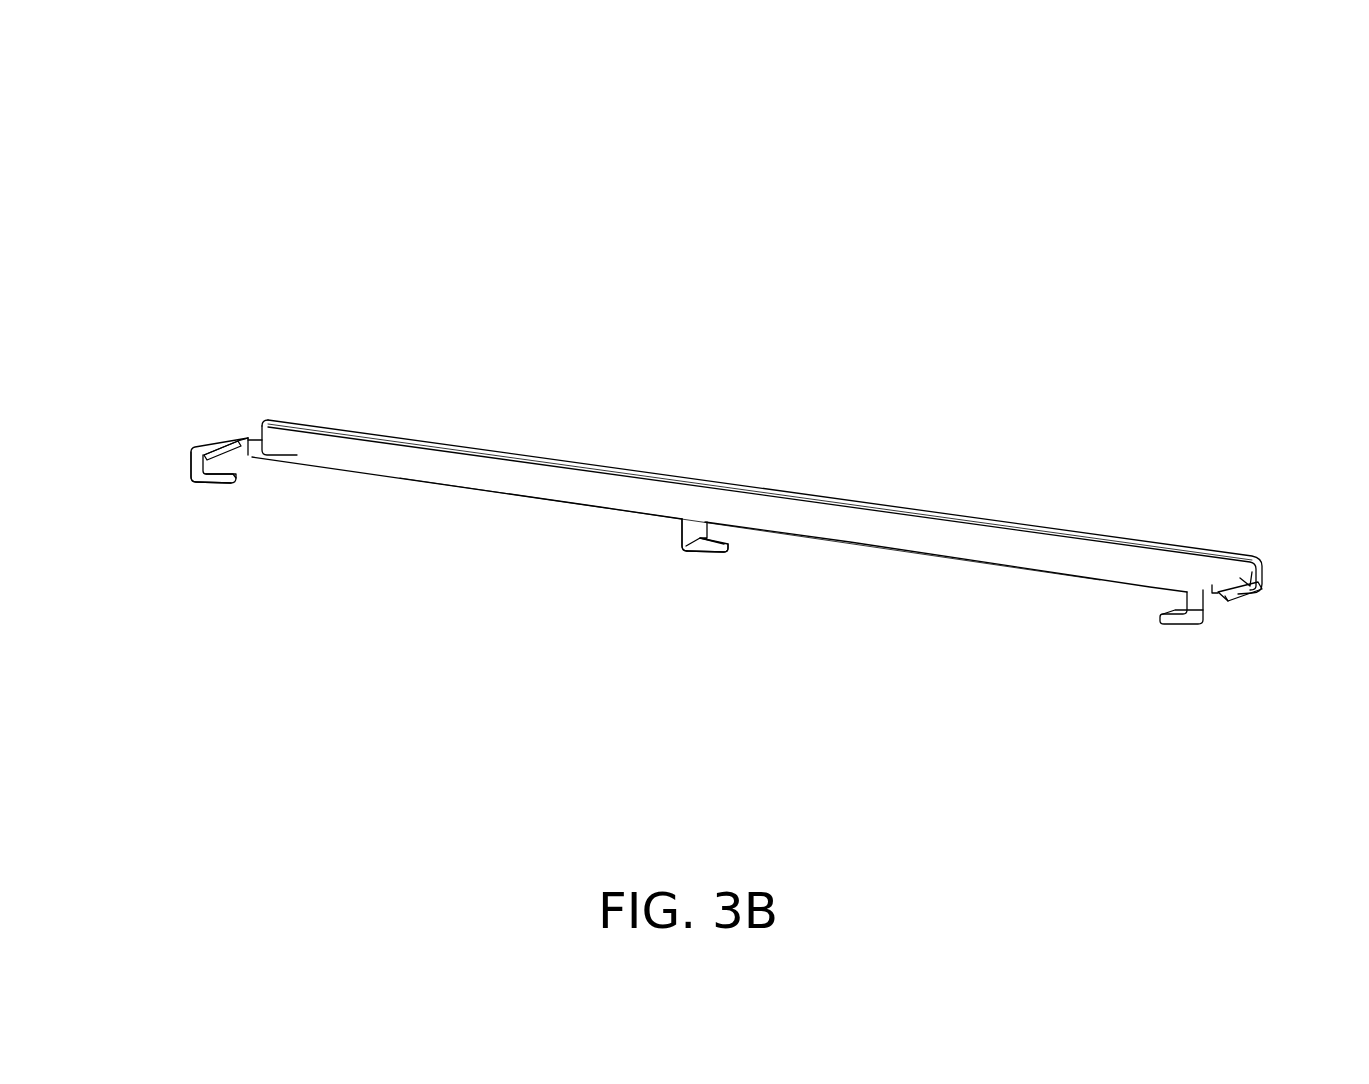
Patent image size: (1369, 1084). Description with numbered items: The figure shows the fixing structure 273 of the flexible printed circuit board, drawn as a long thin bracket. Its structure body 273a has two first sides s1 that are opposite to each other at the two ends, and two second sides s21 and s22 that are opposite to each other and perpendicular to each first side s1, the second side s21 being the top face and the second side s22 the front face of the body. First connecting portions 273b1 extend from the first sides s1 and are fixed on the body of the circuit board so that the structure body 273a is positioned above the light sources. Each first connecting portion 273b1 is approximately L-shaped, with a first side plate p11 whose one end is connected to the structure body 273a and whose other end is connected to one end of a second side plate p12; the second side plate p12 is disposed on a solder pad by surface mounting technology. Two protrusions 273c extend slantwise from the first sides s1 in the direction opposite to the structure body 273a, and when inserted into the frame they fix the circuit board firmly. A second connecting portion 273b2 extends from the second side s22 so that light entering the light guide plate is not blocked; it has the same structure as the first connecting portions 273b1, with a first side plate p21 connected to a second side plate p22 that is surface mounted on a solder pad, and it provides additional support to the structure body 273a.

The fixing structure 273 is at (1338, 91).
The structure body 273a is at (818, 520).
The first connecting portion 273b1 is at (178, 490).
The second connecting portion 273b2 is at (738, 668).
The protrusion 273c is at (213, 443).
The first side s1 is at (237, 416).
The second side s21 is at (560, 458).
The second side s22 is at (640, 513).
The first side plate p11 is at (252, 462).
The second side plate p12 is at (281, 460).
The first side plate p21 is at (682, 530).
The second side plate p22 is at (706, 552).